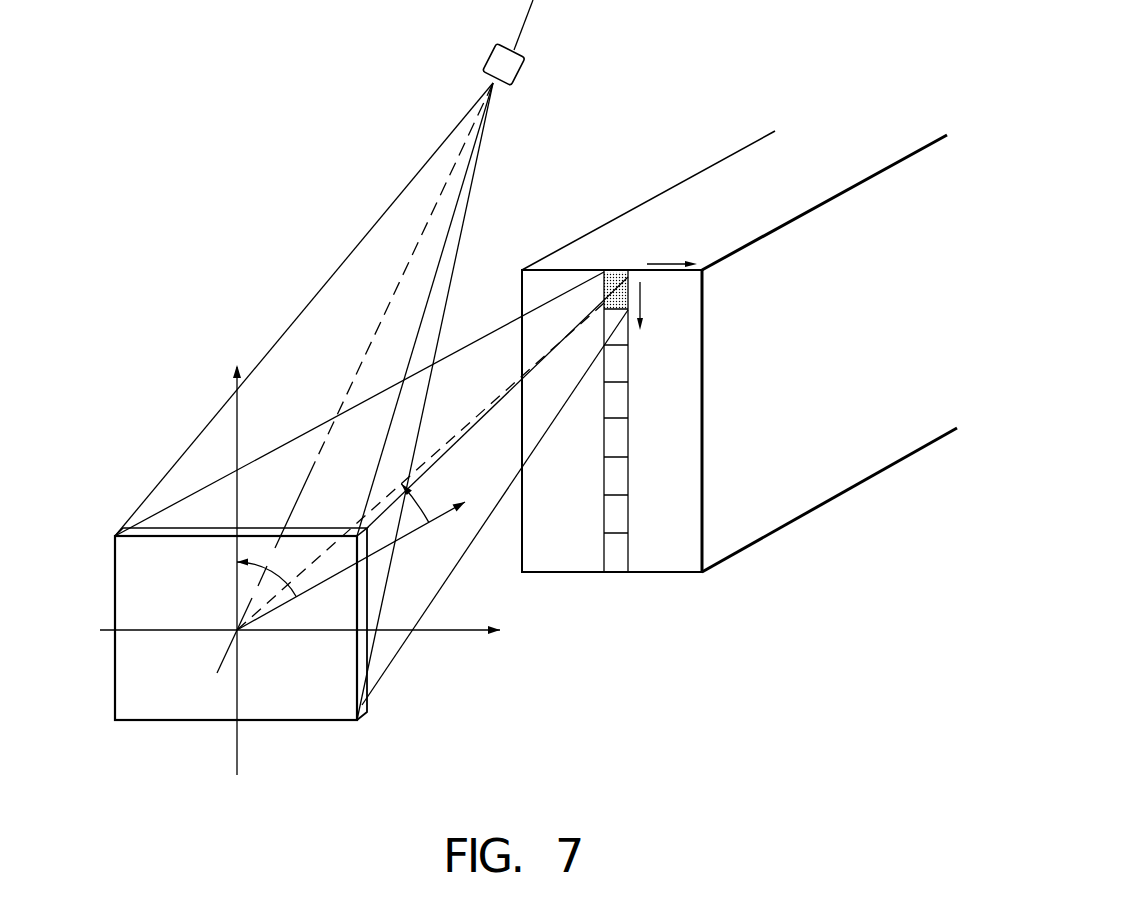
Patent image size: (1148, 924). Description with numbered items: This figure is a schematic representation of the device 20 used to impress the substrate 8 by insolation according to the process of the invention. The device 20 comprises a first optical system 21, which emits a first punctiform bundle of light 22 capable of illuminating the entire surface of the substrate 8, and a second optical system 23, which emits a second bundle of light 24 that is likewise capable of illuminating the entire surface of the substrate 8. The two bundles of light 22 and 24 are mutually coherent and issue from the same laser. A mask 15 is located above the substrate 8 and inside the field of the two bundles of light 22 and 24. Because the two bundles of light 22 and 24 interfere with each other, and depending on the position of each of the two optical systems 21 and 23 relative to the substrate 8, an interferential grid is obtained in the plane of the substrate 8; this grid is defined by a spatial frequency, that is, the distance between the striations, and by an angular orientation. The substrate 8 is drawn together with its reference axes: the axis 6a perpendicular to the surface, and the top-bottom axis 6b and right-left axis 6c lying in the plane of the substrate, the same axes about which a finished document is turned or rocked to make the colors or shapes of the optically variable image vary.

The first optical system 21 is at (497, 62).
The first punctiform bundle of light 22 is at (318, 290).
The substrate 8 is at (295, 687).
The mask 15 is at (375, 690).
The axis perpendicular to the surface of the security element 6a is at (351, 566).
The top-bottom reference axis 6b is at (448, 637).
The right-left reference axis 6c is at (237, 433).
The second bundle of light 24 is at (483, 367).
The device 20 is at (745, 572).
The second optical system 23 is at (655, 227).